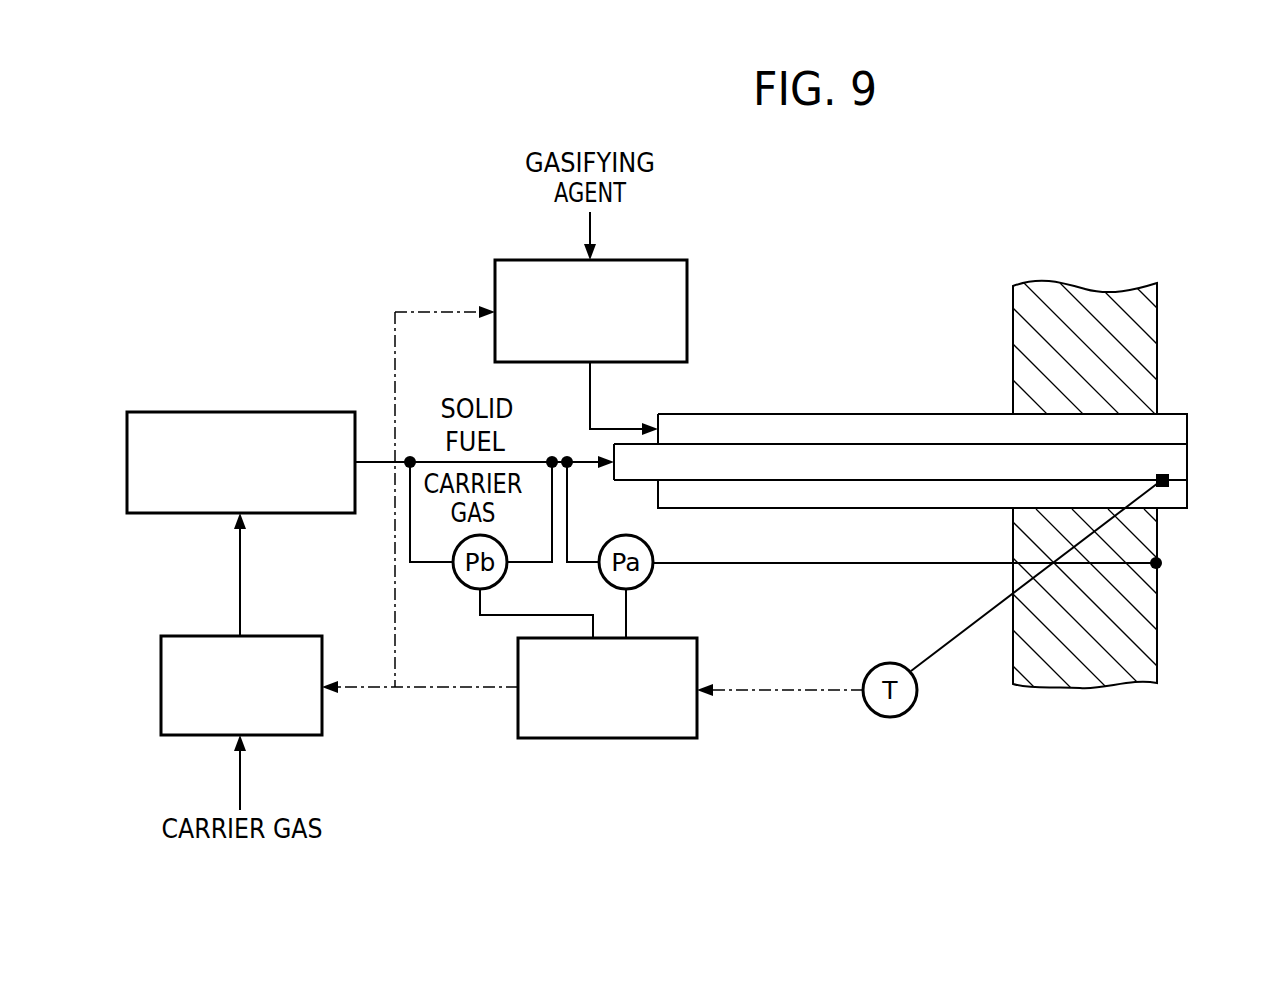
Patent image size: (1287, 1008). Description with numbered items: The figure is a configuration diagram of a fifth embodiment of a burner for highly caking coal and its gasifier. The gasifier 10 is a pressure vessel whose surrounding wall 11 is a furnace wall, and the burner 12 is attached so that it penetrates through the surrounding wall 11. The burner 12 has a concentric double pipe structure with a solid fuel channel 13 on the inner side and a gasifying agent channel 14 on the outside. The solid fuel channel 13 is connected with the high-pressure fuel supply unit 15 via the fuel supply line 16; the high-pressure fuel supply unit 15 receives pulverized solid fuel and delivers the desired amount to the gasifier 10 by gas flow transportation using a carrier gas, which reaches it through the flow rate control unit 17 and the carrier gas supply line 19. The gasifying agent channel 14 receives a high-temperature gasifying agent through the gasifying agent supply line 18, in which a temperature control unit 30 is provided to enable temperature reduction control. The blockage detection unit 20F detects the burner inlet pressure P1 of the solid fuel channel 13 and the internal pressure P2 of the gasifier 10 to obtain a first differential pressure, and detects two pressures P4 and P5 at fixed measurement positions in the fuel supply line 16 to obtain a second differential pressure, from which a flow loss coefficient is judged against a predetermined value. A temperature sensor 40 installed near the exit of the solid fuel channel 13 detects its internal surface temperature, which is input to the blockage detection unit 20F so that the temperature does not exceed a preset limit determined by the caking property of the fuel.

The gasifier 10 is at (1053, 486).
The surrounding wall 11 is at (1013, 670).
The burner 12 is at (938, 495).
The solid fuel channel 13 is at (950, 444).
The gasifying agent channel 14 is at (858, 414).
The high-pressure fuel supply unit 15 is at (305, 412).
The fuel supply line 16 is at (574, 470).
The flow rate control unit 17 is at (322, 715).
The gasifying agent supply line 18 is at (590, 397).
The carrier gas supply line 19 is at (240, 590).
The blockage detection unit 20F is at (614, 738).
The temperature control unit 30 is at (687, 300).
The temperature sensor 40 is at (1168, 478).
The burner inlet pressure P1 is at (566, 456).
The internal pressure of the gasifier P2 is at (1162, 563).
The pressure P4 is at (410, 456).
The pressure P5 is at (550, 456).